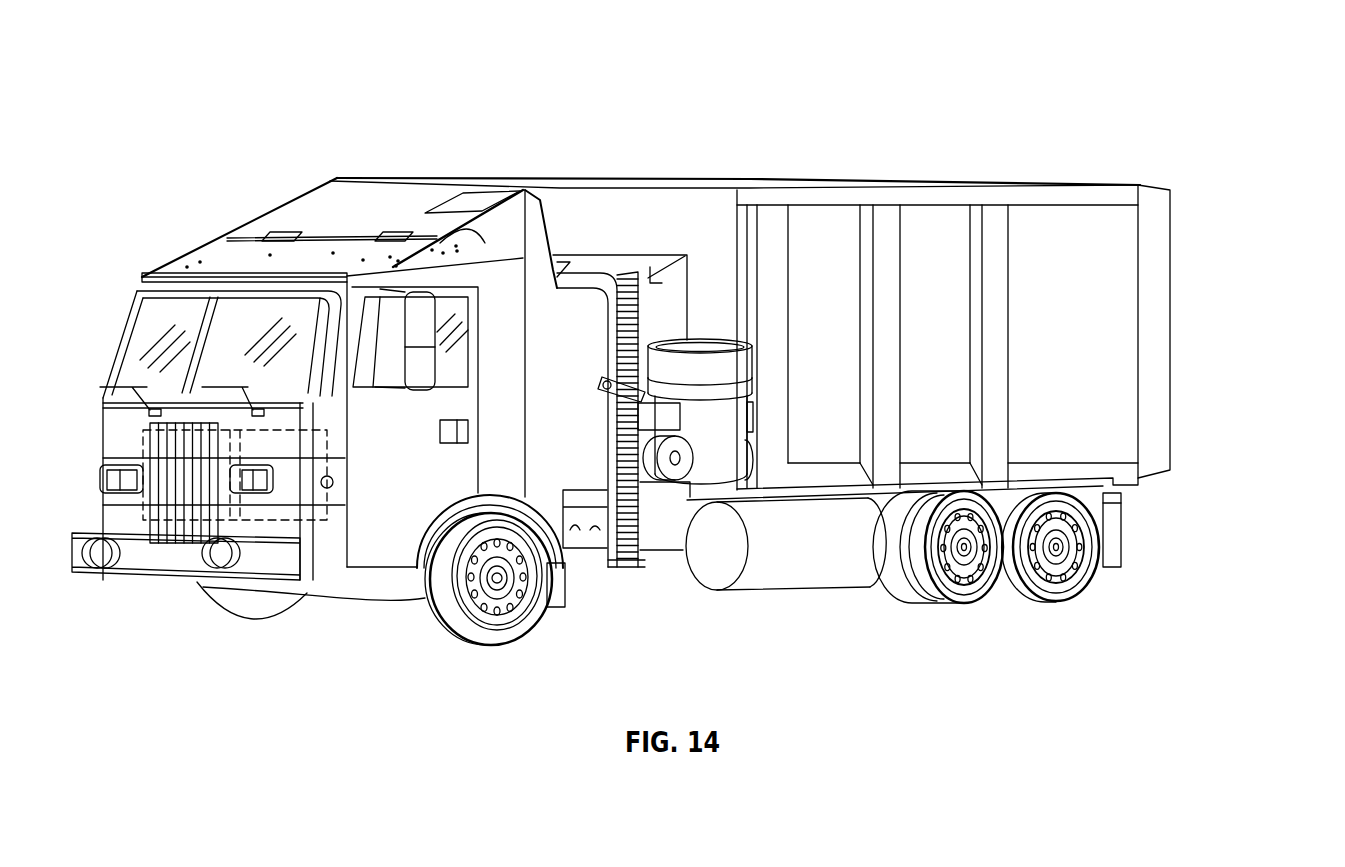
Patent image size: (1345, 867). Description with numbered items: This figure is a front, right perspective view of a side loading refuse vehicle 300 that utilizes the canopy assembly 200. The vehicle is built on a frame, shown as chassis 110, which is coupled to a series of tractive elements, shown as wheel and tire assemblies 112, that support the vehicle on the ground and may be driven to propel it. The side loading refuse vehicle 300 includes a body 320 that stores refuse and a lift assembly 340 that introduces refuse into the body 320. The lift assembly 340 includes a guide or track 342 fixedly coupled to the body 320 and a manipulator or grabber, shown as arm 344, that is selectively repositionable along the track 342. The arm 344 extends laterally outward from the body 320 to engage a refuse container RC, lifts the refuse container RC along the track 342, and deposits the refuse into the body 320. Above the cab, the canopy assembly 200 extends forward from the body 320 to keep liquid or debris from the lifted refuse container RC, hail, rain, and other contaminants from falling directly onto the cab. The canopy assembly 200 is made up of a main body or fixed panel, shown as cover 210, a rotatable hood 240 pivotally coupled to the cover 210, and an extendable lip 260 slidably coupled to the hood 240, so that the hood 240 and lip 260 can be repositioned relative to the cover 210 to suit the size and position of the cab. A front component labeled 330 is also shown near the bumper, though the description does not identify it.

The side loading refuse vehicle 300 is at (1243, 104).
The canopy assembly 200 is at (180, 140).
The cover 210 is at (287, 205).
The hood 240 is at (208, 244).
The lip 260 is at (160, 270).
The lift assembly 340 is at (583, 226).
The arm 344 is at (625, 278).
The track 342 is at (630, 572).
The refuse container RC is at (727, 363).
The body 320 is at (818, 170).
The front bumper sensor housing 330 is at (199, 610).
The chassis 110 is at (774, 608).
The wheel and tire assemblies 112 is at (470, 646).